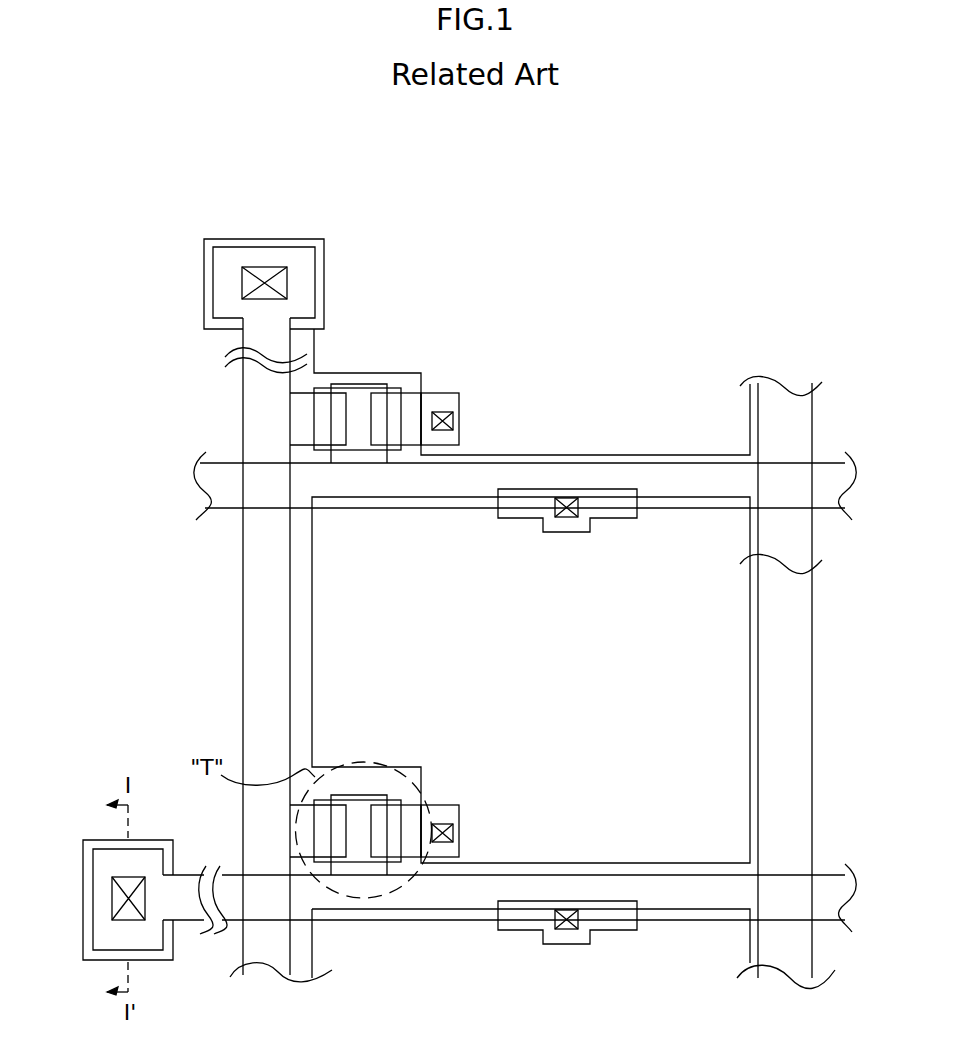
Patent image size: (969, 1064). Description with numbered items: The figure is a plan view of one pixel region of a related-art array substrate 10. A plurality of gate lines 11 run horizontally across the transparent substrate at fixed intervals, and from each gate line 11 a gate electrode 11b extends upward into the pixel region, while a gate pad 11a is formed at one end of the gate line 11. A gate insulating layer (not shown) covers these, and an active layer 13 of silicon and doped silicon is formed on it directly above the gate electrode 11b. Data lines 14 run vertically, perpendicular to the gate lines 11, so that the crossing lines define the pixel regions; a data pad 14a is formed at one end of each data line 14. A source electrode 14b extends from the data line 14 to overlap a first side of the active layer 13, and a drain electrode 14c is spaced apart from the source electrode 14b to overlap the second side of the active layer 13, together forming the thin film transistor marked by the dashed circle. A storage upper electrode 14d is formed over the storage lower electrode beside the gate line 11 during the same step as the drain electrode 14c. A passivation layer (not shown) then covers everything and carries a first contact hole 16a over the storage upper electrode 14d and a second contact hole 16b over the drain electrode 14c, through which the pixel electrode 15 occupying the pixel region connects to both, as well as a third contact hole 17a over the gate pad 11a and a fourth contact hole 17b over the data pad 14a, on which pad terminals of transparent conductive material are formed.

The substrate 10 is at (826, 746).
The gate line 11 is at (683, 885).
The gate pad 11a is at (157, 950).
The gate electrode 11b is at (358, 796).
The active layer 13 is at (393, 848).
The data line 14 is at (258, 575).
The data pad 14a is at (324, 283).
The source electrode 14b is at (323, 812).
The drain electrode 14c is at (445, 810).
The storage upper electrode 14d is at (567, 532).
The pixel electrode 15 is at (812, 565).
The first contact hole 16a is at (563, 497).
The second contact hole 16b is at (455, 825).
The third contact hole 17a is at (115, 896).
The fourth contact hole 17b is at (265, 265).